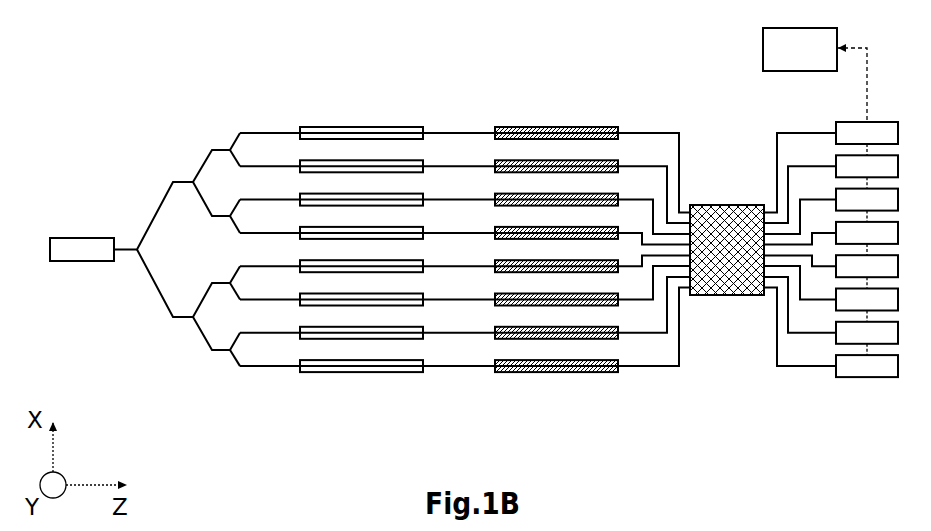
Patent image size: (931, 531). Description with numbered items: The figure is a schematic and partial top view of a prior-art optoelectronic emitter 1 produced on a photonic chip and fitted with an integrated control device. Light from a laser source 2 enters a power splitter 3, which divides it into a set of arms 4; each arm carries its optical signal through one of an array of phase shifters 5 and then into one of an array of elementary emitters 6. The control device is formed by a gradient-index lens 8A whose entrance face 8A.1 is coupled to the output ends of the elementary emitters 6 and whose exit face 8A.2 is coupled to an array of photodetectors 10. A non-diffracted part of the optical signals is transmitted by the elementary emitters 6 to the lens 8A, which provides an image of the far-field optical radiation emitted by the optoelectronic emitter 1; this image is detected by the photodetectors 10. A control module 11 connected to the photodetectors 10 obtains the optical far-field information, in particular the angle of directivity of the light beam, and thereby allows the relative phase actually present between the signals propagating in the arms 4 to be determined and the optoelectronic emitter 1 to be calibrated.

The optoelectronic emitter 1 is at (458, 230).
The laser source 2 is at (80, 265).
The power splitter 3 is at (183, 342).
The arms 4 is at (262, 369).
The phase shifters 5 is at (368, 374).
The elementary emitters 6 is at (557, 374).
The gradient-index lens 8A is at (727, 259).
The entrance face 8A.1 is at (687, 285).
The exit face 8A.2 is at (768, 285).
The photodetectors 10 is at (868, 380).
The control module 11 is at (762, 48).